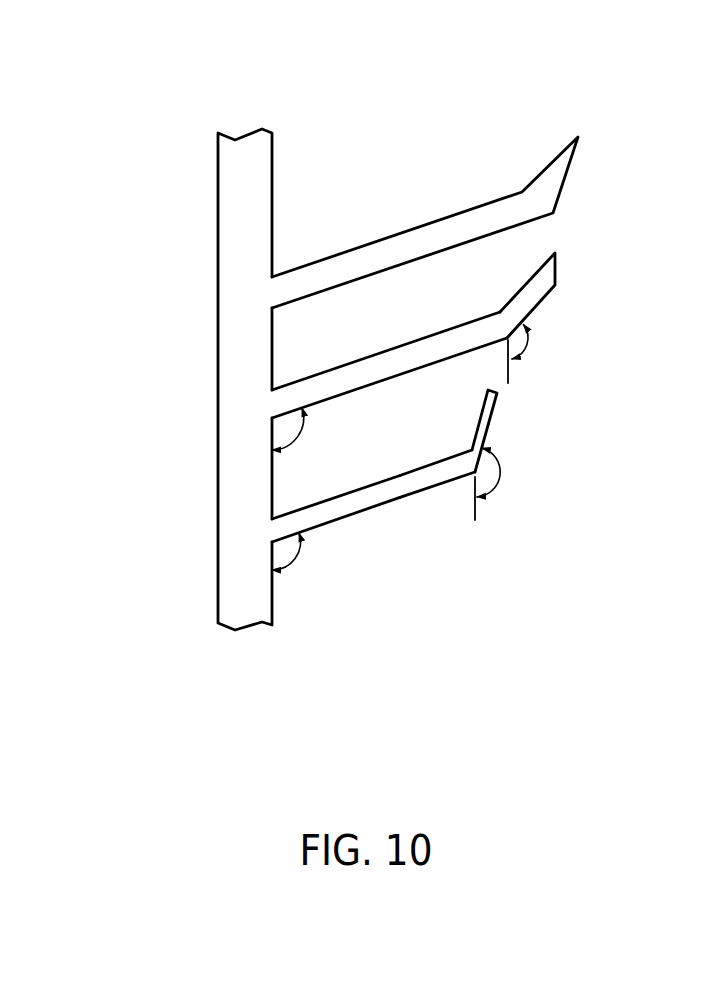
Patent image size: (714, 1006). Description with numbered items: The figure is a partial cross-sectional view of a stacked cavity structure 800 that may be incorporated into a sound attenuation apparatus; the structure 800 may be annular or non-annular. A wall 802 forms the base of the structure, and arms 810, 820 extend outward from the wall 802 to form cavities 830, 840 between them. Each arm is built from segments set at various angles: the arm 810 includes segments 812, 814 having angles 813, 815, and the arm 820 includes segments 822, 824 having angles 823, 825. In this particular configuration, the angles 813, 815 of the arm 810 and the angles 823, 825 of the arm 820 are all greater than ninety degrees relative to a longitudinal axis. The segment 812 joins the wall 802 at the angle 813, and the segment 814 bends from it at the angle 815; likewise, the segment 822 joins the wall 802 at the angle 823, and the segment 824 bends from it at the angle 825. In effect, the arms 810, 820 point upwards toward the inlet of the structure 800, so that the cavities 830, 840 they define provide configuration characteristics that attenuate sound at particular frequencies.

The stacked cavity structure 800 is at (115, 98).
The wall 802 is at (223, 283).
The arm 810 is at (439, 337).
The segment 812 is at (307, 387).
The angle 813 is at (304, 420).
The segment 814 is at (523, 290).
The angle 815 is at (529, 341).
The arm 820 is at (426, 489).
The segment 822 is at (307, 503).
The angle 823 is at (295, 560).
The segment 824 is at (493, 417).
The angle 825 is at (500, 477).
The cavity 830 is at (428, 273).
The cavity 840 is at (440, 447).